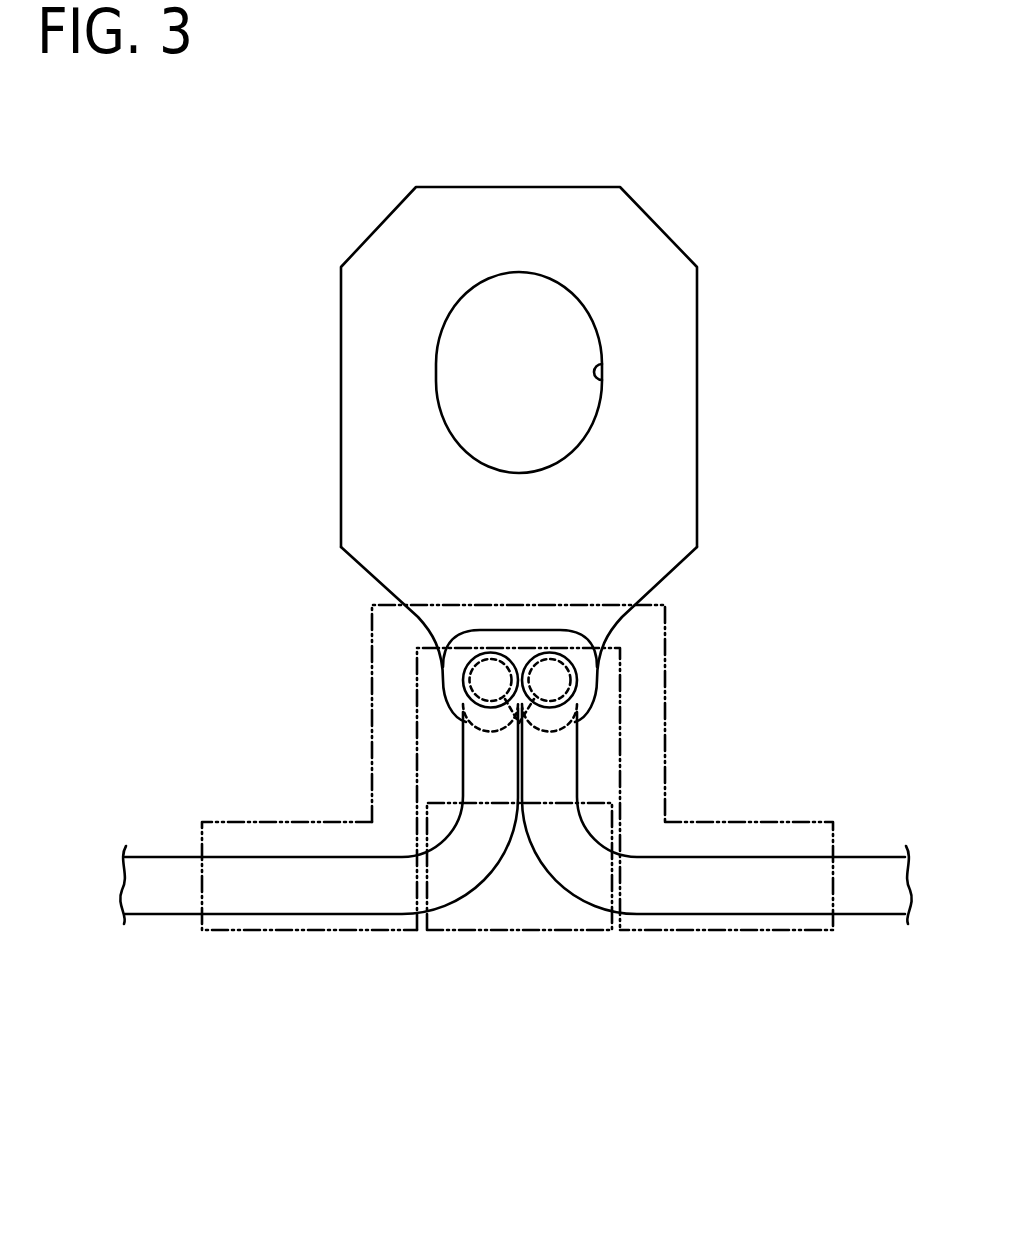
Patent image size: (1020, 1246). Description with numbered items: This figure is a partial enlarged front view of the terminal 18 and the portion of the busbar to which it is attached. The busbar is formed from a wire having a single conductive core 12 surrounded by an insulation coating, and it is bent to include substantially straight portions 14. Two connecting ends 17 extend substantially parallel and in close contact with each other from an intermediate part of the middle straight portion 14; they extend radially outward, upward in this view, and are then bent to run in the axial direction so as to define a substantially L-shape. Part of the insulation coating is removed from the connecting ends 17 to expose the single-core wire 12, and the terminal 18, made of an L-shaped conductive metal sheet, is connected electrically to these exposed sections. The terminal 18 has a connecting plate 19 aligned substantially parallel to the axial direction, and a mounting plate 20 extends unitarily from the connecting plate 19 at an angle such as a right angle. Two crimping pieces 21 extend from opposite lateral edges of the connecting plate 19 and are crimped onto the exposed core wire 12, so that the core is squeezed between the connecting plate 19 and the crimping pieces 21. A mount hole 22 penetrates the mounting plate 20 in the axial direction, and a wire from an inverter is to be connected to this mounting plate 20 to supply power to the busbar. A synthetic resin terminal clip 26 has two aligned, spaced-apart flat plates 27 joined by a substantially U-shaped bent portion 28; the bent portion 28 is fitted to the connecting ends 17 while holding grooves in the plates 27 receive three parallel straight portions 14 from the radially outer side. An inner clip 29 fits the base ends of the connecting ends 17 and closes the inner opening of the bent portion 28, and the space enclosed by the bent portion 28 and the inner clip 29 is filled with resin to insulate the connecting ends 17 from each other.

The single conductive core 12 is at (473, 652).
The straight portion 14 is at (160, 872).
The connecting end portion 17 is at (458, 662).
The terminal 18 is at (580, 434).
The connecting plate 19 is at (508, 640).
The mounting plate 20 is at (682, 295).
The crimping piece 21 is at (455, 697).
The mount hole 22 is at (600, 382).
The terminal clip 26 is at (519, 830).
The flat plate 27 is at (257, 822).
The bent portion 28 is at (482, 605).
The inner clip 29 is at (552, 932).